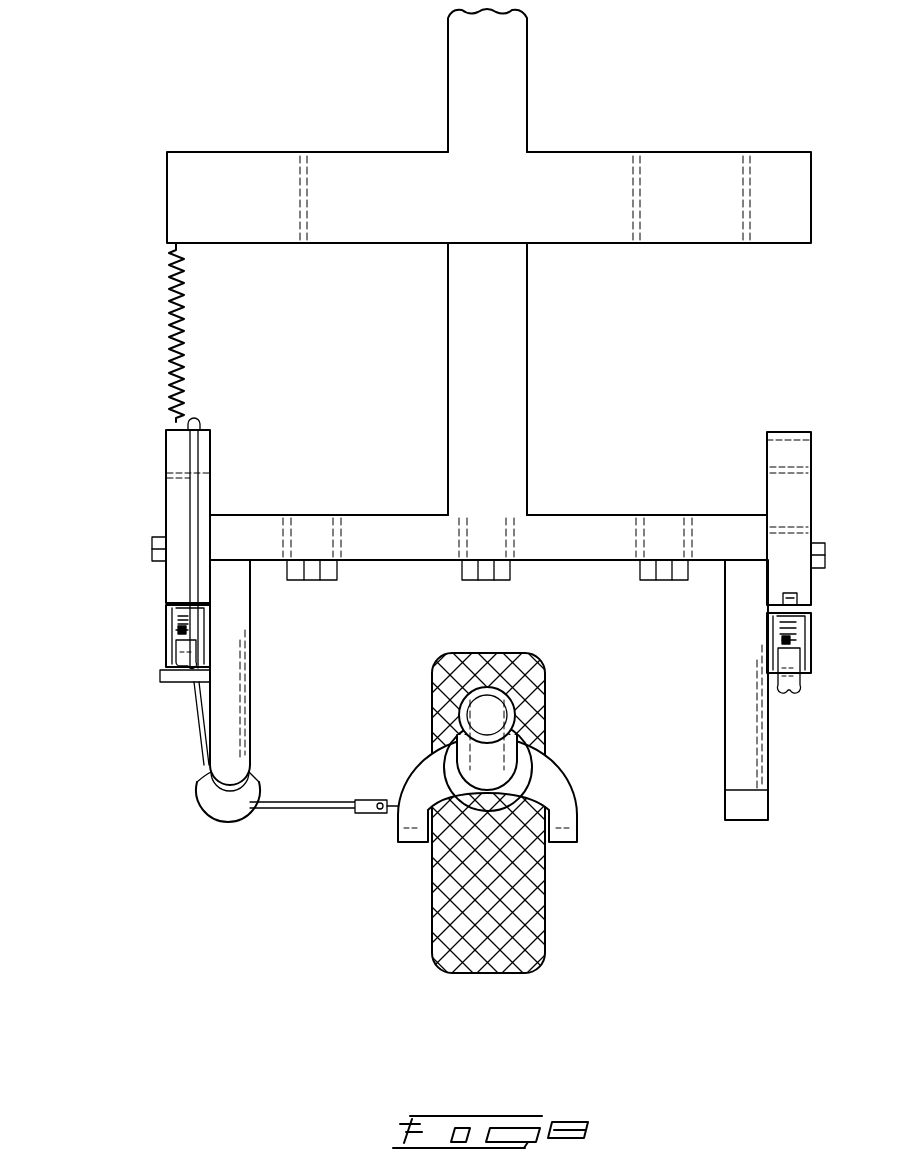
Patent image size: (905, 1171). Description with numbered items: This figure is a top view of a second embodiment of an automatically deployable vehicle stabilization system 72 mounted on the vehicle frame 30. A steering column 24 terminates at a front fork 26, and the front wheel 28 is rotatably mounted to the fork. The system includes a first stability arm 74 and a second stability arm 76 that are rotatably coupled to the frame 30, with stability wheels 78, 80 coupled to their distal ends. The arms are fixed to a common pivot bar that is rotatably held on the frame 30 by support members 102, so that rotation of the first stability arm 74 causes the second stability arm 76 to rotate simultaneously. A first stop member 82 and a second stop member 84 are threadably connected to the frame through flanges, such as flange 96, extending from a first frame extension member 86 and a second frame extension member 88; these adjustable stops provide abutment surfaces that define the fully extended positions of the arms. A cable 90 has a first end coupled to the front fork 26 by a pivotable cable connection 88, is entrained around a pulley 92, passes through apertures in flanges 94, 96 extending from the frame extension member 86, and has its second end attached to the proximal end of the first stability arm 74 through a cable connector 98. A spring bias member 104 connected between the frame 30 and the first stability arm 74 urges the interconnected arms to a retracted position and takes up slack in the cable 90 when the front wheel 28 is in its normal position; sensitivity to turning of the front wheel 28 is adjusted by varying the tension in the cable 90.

The steering column 24 is at (500, 753).
The front fork 26 is at (560, 796).
The front wheel 28 is at (470, 917).
The frame 30 is at (487, 345).
The automatically deployable vehicle stabilization system 72 is at (60, 415).
The first stability arm 74 is at (178, 503).
The second stability arm 76 is at (790, 503).
The stability wheel 78 is at (178, 656).
The stability wheel 80 is at (790, 686).
The first stop member 82 is at (178, 628).
The second stop member 84 is at (802, 644).
The first frame extension member 86 is at (228, 673).
The second frame extension member 88 is at (748, 692).
The cable 90 is at (199, 456).
The pulley 92 is at (208, 796).
The flange 94 is at (172, 683).
The flange 96 is at (172, 597).
The cable connector 98 is at (196, 420).
The support members 102 is at (308, 582).
The spring bias member 104 is at (181, 352).